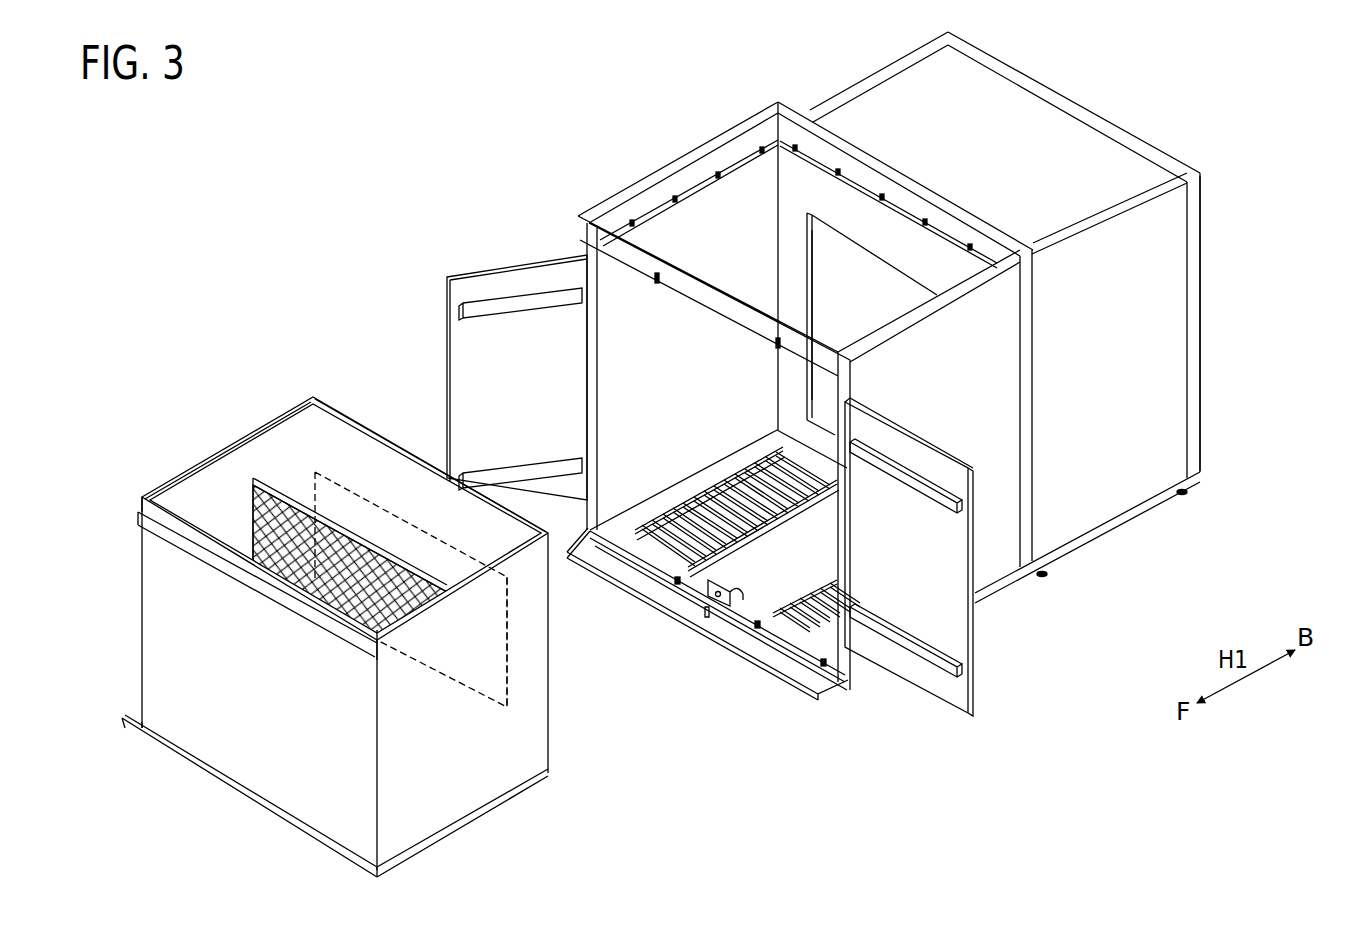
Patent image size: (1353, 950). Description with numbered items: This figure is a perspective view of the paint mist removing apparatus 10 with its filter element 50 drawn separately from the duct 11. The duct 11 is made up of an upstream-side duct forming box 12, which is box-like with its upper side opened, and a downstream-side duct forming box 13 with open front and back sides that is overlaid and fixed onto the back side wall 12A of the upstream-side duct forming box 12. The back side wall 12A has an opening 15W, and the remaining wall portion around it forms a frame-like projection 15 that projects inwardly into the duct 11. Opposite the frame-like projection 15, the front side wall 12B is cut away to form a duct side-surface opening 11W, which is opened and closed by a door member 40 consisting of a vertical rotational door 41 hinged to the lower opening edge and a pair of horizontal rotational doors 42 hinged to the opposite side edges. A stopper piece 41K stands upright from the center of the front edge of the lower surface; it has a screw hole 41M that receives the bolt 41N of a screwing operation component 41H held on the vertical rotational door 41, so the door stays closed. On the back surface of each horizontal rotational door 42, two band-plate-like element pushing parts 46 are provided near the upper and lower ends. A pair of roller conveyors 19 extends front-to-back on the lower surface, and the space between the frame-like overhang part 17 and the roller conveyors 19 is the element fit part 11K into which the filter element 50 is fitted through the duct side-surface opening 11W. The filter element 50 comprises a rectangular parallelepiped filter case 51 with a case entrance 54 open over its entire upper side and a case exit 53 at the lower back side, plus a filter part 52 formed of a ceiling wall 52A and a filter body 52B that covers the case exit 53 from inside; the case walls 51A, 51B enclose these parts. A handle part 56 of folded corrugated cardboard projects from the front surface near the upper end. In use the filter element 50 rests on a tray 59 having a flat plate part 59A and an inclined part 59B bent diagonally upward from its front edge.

The paint mist removing apparatus 10 is at (596, 88).
The duct 11 is at (1108, 637).
The element fit part 11K is at (797, 183).
The duct side-surface opening 11W is at (597, 273).
The upstream-side duct forming box 12 is at (1003, 548).
The back side wall 12A is at (923, 258).
The front side wall 12B is at (853, 352).
The downstream-side duct forming box 13 is at (1058, 520).
The frame-like projection 15 is at (780, 262).
The opening 15W is at (797, 273).
The frame-like overhang part 17 is at (657, 220).
The roller conveyors 19 is at (683, 492).
The door member 40 is at (848, 697).
The vertical rotational door 41 is at (803, 680).
The screwing operation component 41H is at (707, 610).
The stopper piece 41K is at (723, 607).
The screw hole 41M is at (742, 593).
The bolt 41N is at (707, 620).
The horizontal rotational doors 42 is at (497, 282).
The element pushing part 46 is at (487, 485).
The filter element 50 is at (200, 455).
The filter case 51 is at (177, 627).
The box side wall 51A is at (363, 423).
The box inner wall 51B is at (512, 621).
The filter part 52 is at (334, 491).
The ceiling wall 52A is at (350, 535).
The filter body 52B is at (350, 592).
The case exit 53 is at (512, 680).
The case entrance 54 is at (180, 500).
The handle part 56 is at (145, 525).
The tray 59 is at (253, 802).
The flat plate part 59A is at (488, 808).
The inclined part 59B is at (365, 857).